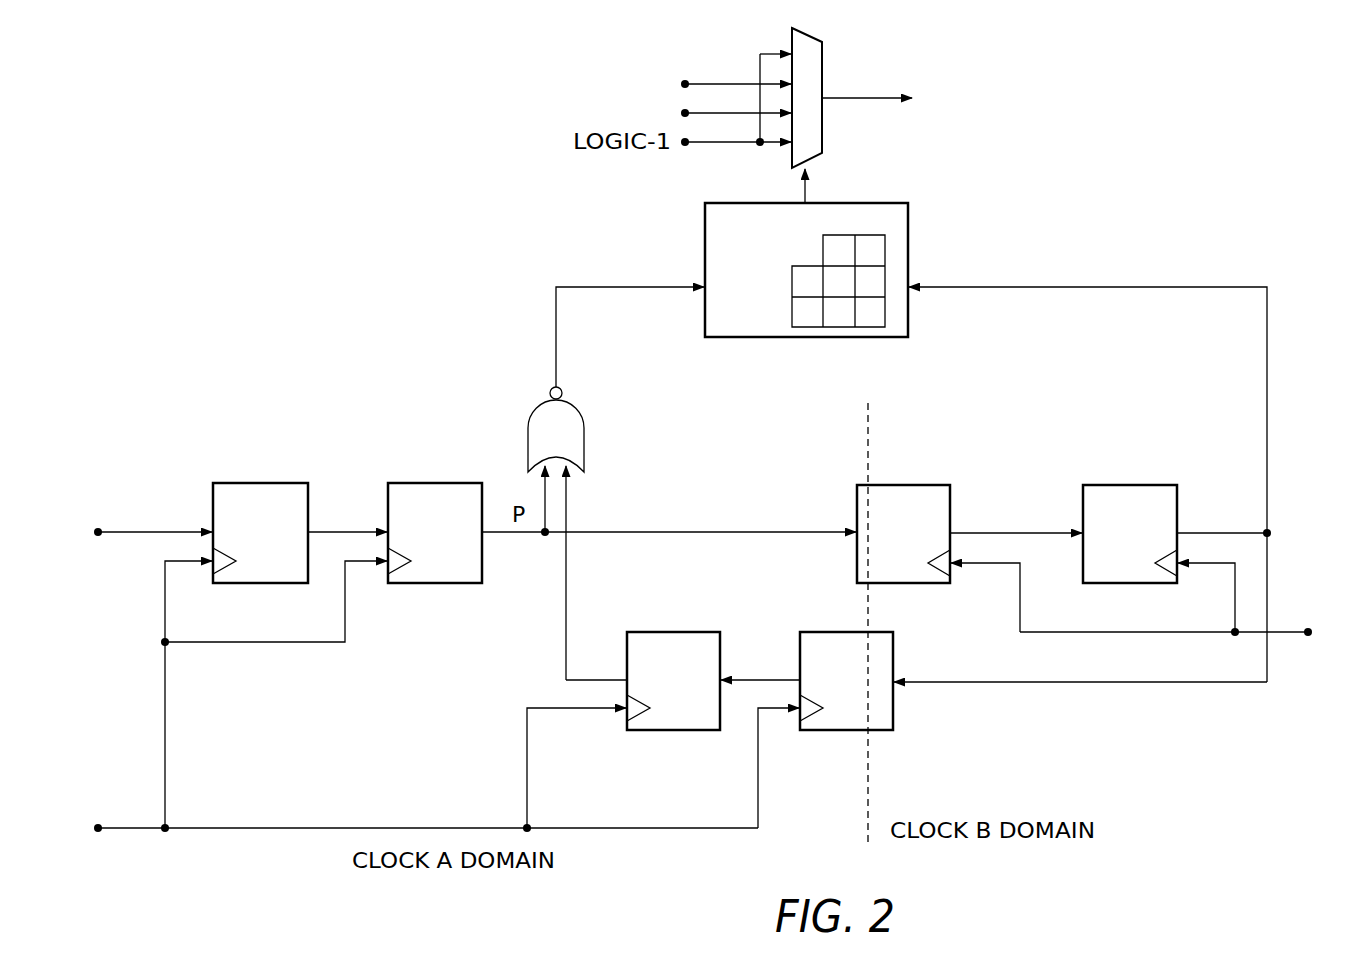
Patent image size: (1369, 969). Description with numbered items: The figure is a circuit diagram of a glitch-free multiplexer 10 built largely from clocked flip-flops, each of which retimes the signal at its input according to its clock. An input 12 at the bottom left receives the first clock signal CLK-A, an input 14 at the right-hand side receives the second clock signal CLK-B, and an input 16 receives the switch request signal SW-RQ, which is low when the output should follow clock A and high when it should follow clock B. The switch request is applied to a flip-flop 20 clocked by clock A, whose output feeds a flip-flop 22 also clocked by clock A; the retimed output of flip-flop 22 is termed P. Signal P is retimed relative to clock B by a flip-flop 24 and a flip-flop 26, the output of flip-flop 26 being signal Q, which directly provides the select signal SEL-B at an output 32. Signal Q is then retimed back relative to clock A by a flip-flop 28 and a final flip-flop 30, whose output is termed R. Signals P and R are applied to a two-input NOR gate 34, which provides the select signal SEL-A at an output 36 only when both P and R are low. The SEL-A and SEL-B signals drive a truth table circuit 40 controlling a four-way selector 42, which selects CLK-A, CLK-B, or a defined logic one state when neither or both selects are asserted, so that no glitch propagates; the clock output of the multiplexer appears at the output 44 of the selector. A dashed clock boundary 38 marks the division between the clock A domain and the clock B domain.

The glitch-free multiplexer 10 is at (400, 361).
The input 12 is at (685, 113).
The input 14 is at (685, 82).
The input 16 is at (98, 536).
The flip-flop 20 is at (262, 483).
The flip-flop 22 is at (436, 483).
The flip-flop 24 is at (922, 485).
The flip-flop 26 is at (1133, 485).
The flip-flop 28 is at (823, 730).
The flip-flop 30 is at (670, 730).
The output 32 is at (1267, 368).
The NOR gate 34 is at (585, 435).
The output 36 is at (556, 350).
The clock boundary 38 is at (868, 777).
The truth table circuit 40 is at (908, 240).
The four-way selector 42 is at (822, 150).
The output 44 is at (865, 98).